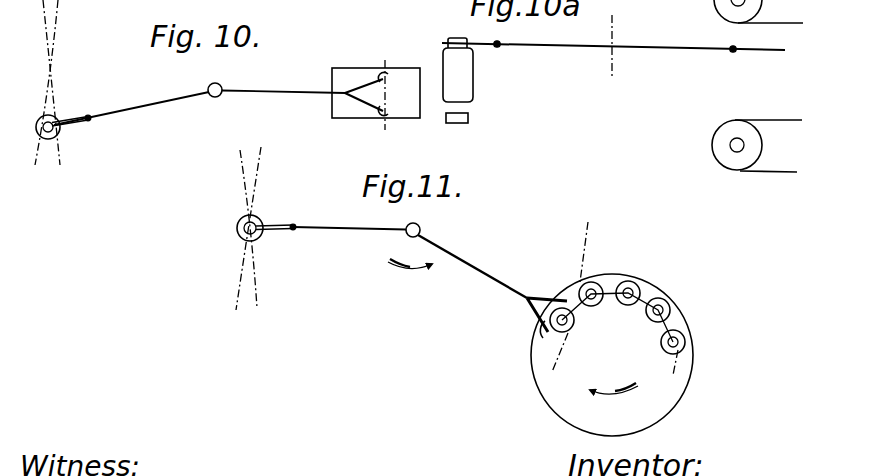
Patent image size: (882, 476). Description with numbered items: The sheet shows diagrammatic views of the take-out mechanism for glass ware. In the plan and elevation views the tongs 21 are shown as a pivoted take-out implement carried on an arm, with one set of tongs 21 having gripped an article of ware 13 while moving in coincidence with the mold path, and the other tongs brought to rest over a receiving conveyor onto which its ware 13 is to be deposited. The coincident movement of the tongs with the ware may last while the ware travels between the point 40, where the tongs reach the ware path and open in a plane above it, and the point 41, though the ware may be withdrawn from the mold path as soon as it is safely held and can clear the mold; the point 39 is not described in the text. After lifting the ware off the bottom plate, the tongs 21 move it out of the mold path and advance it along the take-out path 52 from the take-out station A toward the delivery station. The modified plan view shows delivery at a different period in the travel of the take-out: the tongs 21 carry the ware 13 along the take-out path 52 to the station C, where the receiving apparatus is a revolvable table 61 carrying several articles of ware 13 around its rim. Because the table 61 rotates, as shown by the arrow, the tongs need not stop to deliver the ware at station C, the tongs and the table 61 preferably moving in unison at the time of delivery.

The ware 13 is at (478, 271).
The tongs 21 is at (278, 238).
The cam path point 39 is at (238, 302).
The point 40 is at (246, 178).
The point 41 is at (247, 273).
The take-out path 52 is at (258, 152).
The table 61 is at (538, 388).
The take-out station A is at (232, 229).
The delivery station C is at (564, 323).